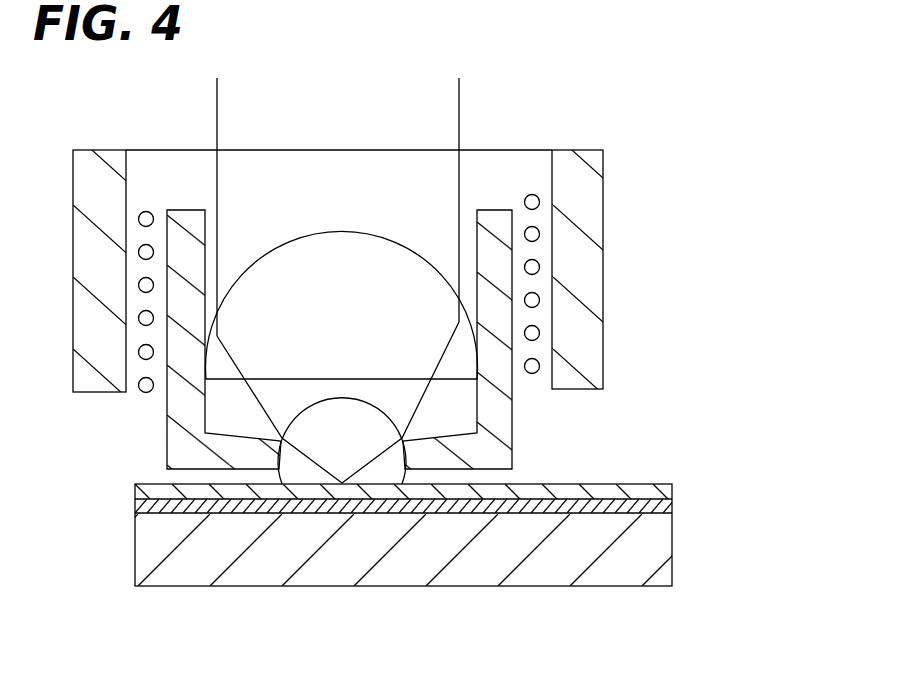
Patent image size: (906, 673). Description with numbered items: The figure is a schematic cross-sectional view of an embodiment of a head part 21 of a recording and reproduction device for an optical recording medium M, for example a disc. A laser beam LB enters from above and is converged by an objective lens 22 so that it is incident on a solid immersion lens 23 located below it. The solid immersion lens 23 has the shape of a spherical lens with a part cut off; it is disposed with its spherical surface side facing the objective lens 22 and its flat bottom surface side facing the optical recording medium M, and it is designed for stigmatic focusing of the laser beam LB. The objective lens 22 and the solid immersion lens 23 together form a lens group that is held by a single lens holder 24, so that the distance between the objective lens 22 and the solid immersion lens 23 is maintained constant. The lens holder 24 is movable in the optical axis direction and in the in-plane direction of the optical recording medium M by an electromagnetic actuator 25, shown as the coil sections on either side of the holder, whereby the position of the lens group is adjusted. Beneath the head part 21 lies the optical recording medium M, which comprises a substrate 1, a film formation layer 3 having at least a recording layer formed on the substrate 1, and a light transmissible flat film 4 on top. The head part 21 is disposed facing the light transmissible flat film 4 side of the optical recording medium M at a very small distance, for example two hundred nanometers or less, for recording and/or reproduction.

The substrate 1 is at (650, 541).
The film formation layer 3 is at (655, 503).
The light transmissible flat film 4 is at (653, 488).
The head part 21 is at (742, 104).
The objective lens 22 is at (311, 268).
The solid immersion lens 23 is at (335, 447).
The lens holder 24 is at (490, 440).
The electromagnetic actuator 25 is at (139, 356).
The laser beam LB is at (458, 98).
The optical recording medium M is at (553, 665).